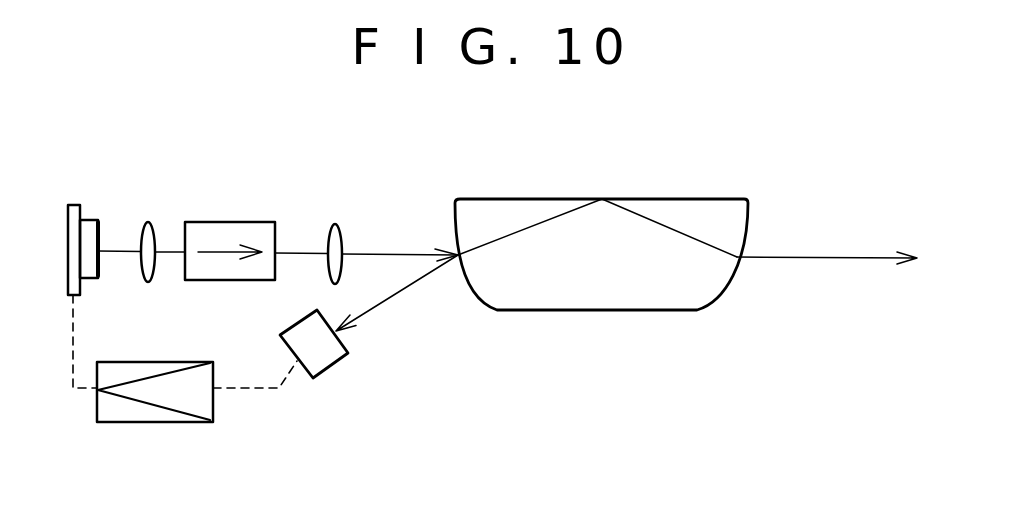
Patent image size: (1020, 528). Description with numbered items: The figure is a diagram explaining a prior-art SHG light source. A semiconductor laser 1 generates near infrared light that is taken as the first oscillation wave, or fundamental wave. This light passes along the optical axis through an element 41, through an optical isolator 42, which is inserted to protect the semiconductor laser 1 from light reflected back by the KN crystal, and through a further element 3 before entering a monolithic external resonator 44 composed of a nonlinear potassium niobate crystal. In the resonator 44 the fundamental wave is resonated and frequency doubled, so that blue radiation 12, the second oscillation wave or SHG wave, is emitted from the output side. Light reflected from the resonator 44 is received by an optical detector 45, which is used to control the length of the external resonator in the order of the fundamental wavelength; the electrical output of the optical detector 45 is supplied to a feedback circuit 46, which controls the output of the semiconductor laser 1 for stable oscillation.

The semiconductor laser 1 is at (91, 226).
The collimator lens 41 is at (148, 224).
The optical isolator 42 is at (232, 226).
The condenser lens 3 is at (335, 227).
The monolithic external resonator 44 is at (693, 210).
The blue radiation 12 is at (827, 232).
The optical detector 45 is at (334, 361).
The feedback circuit 46 is at (147, 415).